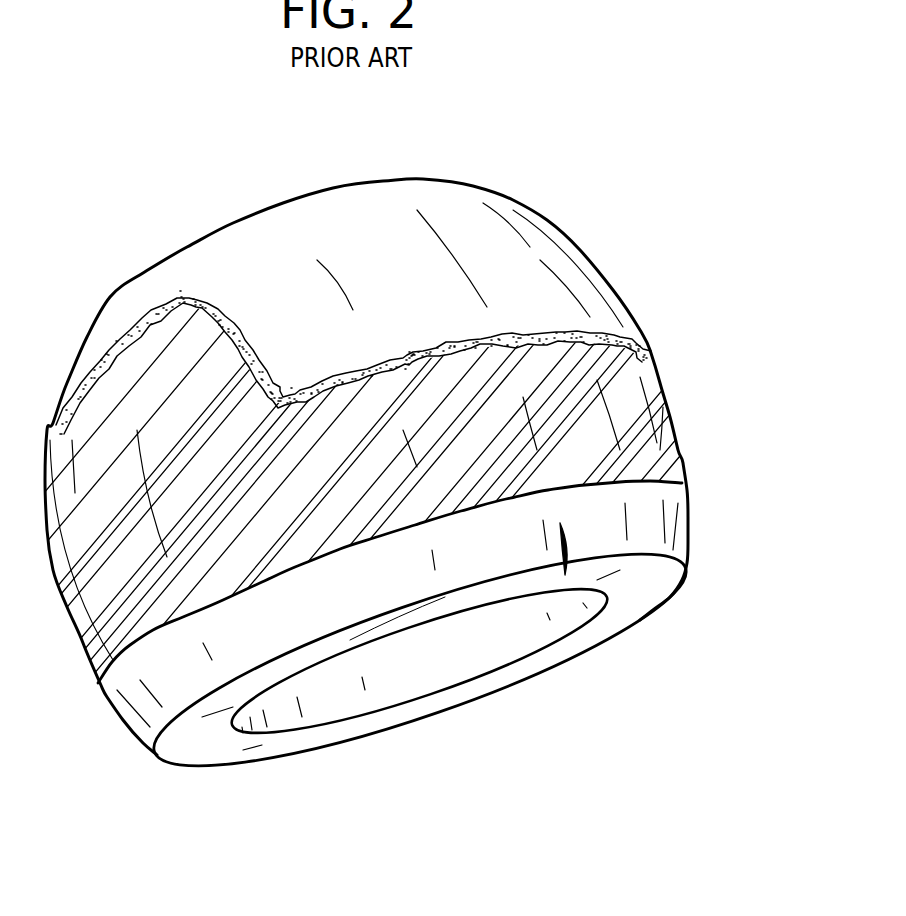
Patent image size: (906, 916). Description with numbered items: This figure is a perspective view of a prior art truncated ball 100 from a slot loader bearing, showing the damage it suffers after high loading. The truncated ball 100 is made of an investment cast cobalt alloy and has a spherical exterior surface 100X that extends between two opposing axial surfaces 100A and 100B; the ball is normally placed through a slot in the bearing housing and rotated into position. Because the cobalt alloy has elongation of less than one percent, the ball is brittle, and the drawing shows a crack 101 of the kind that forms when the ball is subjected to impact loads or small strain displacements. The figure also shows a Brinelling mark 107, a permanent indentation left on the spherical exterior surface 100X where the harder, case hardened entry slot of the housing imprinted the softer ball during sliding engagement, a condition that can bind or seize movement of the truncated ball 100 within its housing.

The truncated ball 100 is at (538, 133).
The axial surface 100A is at (648, 592).
The axial surface 100B is at (145, 273).
The spherical exterior surface 100X is at (583, 417).
The crack 101 is at (563, 550).
The Brinelling mark 107 is at (240, 350).